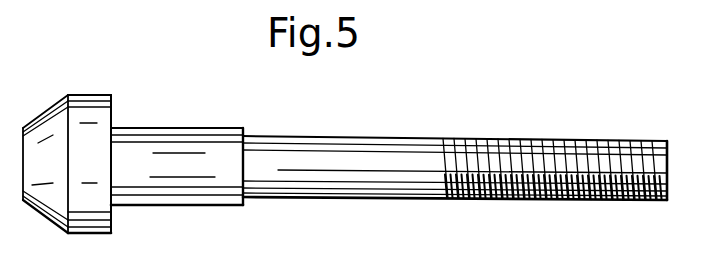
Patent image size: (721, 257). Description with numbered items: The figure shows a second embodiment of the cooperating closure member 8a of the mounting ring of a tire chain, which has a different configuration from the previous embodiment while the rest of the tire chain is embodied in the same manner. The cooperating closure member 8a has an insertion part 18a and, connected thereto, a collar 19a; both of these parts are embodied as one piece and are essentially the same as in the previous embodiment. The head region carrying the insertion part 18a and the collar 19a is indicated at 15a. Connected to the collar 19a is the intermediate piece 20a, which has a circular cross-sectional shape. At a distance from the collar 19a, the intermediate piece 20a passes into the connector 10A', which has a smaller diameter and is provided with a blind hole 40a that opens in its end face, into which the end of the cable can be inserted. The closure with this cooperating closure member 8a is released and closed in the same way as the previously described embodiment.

The insertion part 18a is at (53, 112).
The head 15a is at (81, 94).
The collar 19a is at (97, 115).
The intermediate piece 20a is at (218, 150).
The cooperating closure member 8a is at (373, 134).
The connector 10A' is at (453, 142).
The blind hole 40a is at (575, 155).